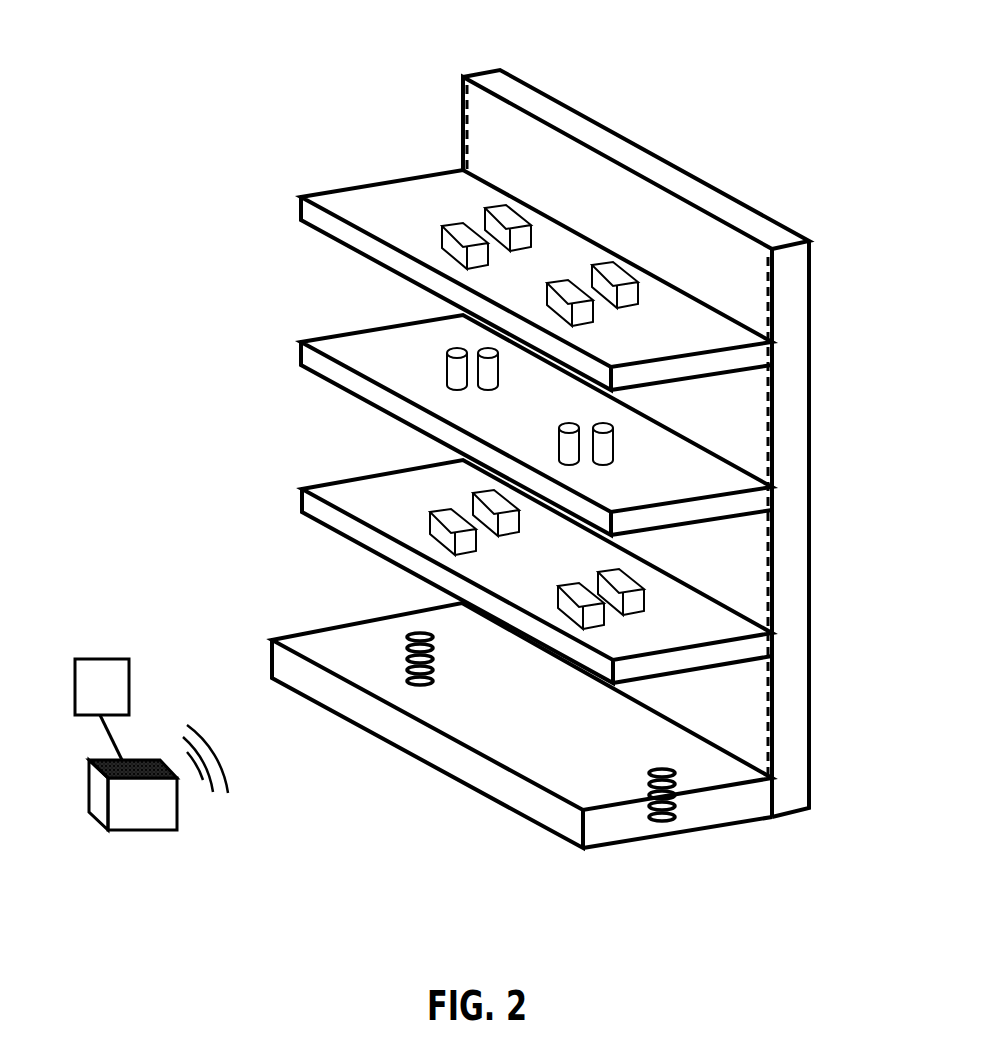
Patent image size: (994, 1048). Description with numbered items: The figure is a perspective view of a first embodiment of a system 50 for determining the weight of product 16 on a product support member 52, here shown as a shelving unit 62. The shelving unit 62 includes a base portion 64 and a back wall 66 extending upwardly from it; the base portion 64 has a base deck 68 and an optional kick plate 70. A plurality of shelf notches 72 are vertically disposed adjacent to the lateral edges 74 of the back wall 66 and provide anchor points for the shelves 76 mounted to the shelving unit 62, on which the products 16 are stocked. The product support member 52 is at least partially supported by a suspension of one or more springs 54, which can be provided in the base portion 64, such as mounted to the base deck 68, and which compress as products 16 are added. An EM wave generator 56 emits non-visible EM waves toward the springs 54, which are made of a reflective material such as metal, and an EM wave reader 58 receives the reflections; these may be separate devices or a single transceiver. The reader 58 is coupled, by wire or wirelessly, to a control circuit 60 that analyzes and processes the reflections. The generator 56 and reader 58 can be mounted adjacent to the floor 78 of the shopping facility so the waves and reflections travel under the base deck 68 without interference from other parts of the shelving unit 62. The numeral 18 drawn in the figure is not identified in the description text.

The system 50 is at (403, 864).
The back panel 18 is at (538, 90).
The back wall 66 is at (543, 140).
The shelving unit 62 is at (692, 172).
The lateral edges 74 is at (775, 277).
The shelf notches 72 is at (467, 128).
The shelves 76 is at (335, 204).
The product 16 is at (635, 275).
The product support member 52 is at (600, 812).
The kick plate 70 is at (410, 735).
The base deck 68 is at (515, 757).
The base portion 64 is at (567, 795).
The springs 54 is at (403, 640).
The control circuit 60 is at (97, 659).
The EM wave generator 56 is at (145, 830).
The EM wave reader 58 is at (133, 795).
The floor 78 is at (313, 838).